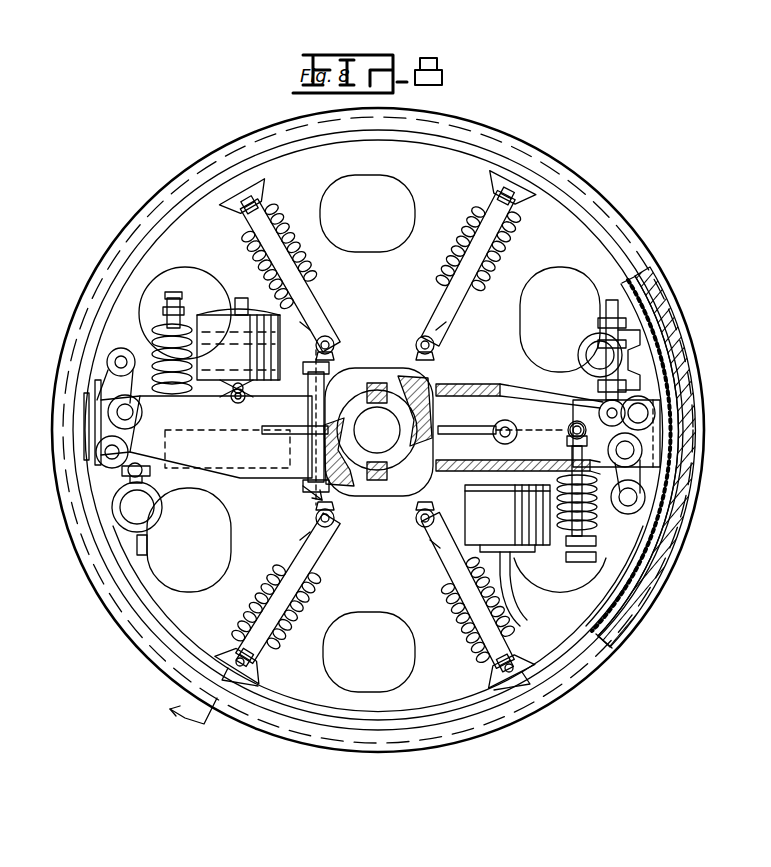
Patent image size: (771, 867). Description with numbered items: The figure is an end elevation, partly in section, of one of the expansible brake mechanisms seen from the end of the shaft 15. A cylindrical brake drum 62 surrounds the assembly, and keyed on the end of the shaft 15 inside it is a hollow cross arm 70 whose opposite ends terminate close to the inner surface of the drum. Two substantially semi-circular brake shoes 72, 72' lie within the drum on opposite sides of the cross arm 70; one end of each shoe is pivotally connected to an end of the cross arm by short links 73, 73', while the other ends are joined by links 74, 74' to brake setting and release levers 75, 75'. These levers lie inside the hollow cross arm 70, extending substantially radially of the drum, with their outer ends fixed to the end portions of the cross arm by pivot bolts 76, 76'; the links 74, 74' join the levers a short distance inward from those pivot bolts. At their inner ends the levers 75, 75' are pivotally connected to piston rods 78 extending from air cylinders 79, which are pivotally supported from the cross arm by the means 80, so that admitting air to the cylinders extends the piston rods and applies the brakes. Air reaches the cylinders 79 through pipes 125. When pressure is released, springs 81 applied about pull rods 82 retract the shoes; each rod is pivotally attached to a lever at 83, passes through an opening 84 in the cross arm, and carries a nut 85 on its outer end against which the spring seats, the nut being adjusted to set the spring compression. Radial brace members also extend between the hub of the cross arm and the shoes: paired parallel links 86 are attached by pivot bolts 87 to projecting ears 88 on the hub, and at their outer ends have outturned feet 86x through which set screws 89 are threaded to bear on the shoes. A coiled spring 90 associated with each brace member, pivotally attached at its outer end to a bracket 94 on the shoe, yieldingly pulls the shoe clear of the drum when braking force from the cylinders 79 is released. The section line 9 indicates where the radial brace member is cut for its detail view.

The section line 9 is at (236, 606).
The shaft 15 is at (384, 400).
The brake drum 62 is at (548, 162).
The hollow cross arm 70 is at (278, 488).
The brake shoe 72 is at (378, 430).
The brake shoe 72' is at (378, 621).
The short link 73 is at (75, 375).
The short link 73' is at (664, 446).
The link 74 is at (77, 438).
The link 74' is at (657, 457).
The brake setting and release lever 75 is at (172, 513).
The brake setting and release lever 75' is at (519, 413).
The pivot bolt 76 is at (71, 431).
The pivot bolt 76' is at (685, 433).
The piston rod 78 is at (256, 412).
The air cylinder 79 is at (300, 322).
The pivotal support means 80 is at (232, 398).
The spring 81 is at (208, 318).
The pull rod 82 is at (178, 298).
The pivotal attachment 83 is at (585, 420).
The opening 84 is at (507, 518).
The nut 85 is at (185, 330).
The link 86 is at (262, 212).
The outturned foot 86x is at (518, 204).
The pivot bolt 87 is at (440, 336).
The projecting ear 88 is at (330, 342).
The set screw 89 is at (500, 200).
The coiled spring 90 is at (290, 258).
The bracket 94 is at (266, 682).
The pipe 125 is at (524, 622).